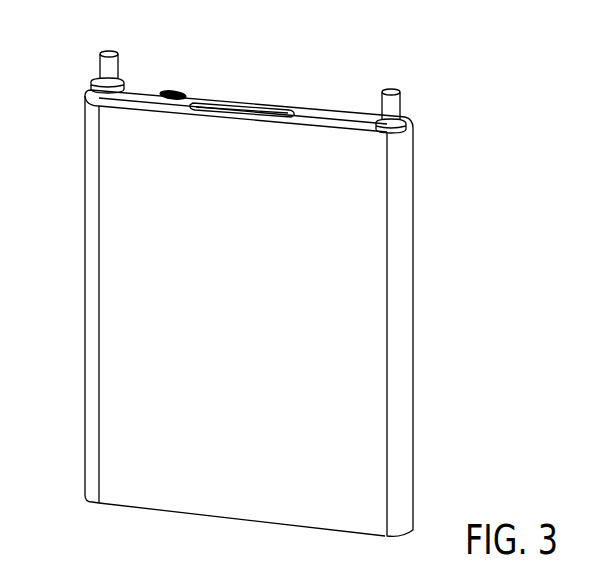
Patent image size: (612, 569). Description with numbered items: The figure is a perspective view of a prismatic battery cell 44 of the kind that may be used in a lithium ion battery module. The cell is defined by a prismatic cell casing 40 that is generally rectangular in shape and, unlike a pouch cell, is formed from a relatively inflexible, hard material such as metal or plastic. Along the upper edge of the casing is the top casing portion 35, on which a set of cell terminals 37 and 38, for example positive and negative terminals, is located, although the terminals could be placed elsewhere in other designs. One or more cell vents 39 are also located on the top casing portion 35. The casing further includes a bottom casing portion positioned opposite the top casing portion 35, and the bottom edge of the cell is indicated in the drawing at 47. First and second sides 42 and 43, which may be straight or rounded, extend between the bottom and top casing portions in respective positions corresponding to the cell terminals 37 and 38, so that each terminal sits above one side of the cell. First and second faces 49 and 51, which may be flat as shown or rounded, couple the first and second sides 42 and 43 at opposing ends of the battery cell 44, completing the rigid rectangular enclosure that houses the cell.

The top casing portion 35 is at (283, 103).
The cell terminal 37 is at (101, 55).
The cell terminal 38 is at (401, 93).
The cell vent 39 is at (232, 102).
The prismatic cell casing 40 is at (413, 193).
The first side 42 is at (86, 172).
The second side 43 is at (402, 302).
The battery cell 44 is at (388, 45).
The bottom wall 47 is at (241, 520).
The first face 49 is at (390, 463).
The second face 51 is at (414, 392).